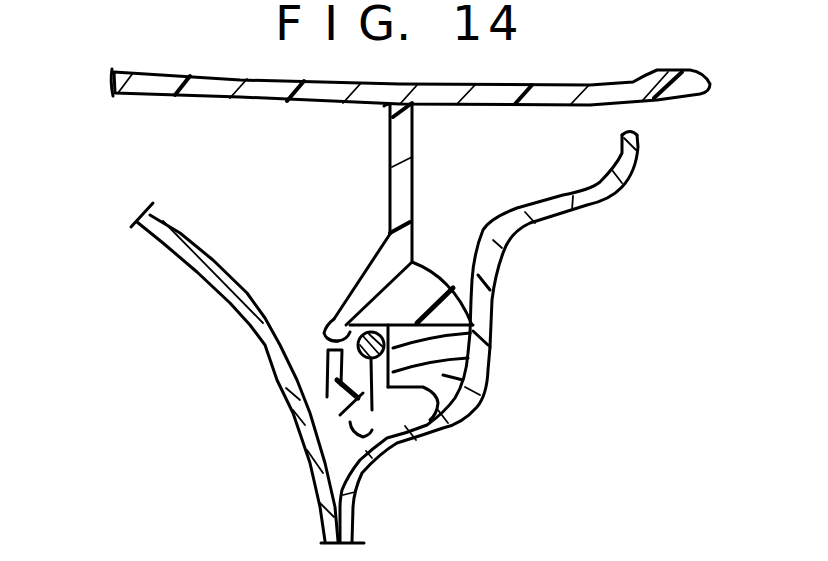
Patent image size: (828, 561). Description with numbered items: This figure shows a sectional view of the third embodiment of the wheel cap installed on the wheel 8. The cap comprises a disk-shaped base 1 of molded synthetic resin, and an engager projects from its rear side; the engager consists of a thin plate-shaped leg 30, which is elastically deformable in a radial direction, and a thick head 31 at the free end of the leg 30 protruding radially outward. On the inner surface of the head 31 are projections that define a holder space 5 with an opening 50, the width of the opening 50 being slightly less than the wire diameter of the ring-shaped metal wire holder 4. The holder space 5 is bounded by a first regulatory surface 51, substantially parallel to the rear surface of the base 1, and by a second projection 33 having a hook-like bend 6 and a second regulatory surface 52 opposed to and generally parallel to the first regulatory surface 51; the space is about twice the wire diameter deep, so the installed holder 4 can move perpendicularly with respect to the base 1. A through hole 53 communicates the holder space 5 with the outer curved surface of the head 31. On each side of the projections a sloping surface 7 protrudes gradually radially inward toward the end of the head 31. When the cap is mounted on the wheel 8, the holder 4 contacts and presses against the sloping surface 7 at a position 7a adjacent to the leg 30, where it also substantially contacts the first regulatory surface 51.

The base 1 is at (571, 86).
The leg 30 is at (390, 137).
The metal wire holder 4 is at (372, 332).
The first regulatory surface 51 is at (324, 315).
The opening 50 is at (326, 345).
The hook-like bend 6 is at (327, 363).
The wheel 8 is at (610, 190).
The sloping surface 7 is at (490, 366).
The position 7a is at (492, 334).
The through hole 53 is at (463, 380).
The head 31 is at (412, 436).
The second regulatory surface 52 is at (367, 428).
The holder space 5 is at (355, 379).
The second projection 33 is at (363, 393).